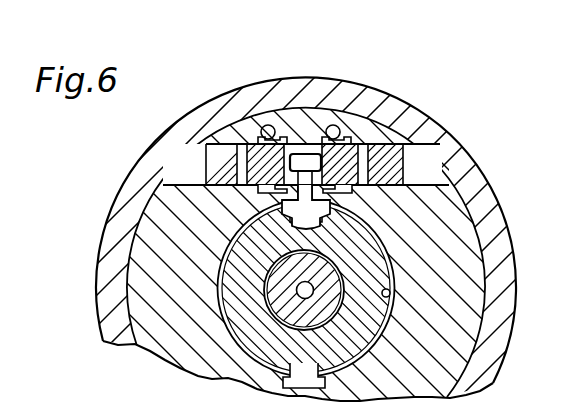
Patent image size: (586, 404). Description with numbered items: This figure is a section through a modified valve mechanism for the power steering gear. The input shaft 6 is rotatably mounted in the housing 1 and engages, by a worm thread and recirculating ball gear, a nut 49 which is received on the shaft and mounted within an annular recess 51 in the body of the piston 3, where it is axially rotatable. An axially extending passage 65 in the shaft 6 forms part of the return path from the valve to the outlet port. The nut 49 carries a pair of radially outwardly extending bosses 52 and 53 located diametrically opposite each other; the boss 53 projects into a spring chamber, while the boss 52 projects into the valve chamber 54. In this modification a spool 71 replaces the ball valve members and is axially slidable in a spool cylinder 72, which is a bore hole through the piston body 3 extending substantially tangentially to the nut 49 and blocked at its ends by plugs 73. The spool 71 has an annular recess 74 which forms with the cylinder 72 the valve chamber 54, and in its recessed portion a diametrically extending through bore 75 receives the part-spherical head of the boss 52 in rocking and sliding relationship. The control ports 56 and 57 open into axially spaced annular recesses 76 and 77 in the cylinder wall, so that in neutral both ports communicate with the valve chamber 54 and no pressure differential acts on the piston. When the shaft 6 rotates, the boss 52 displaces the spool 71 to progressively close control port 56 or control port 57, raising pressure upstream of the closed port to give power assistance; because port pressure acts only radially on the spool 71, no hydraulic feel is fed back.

The housing 1 is at (199, 118).
The piston 3 is at (158, 223).
The input shaft 6 is at (336, 306).
The nut 49 is at (236, 285).
The annular recess 51 is at (391, 295).
The boss 52 is at (330, 215).
The boss 53 is at (320, 380).
The valve chamber 54 is at (308, 153).
The control port 56 is at (264, 125).
The control port 57 is at (340, 128).
The axially extending passage 65 is at (312, 298).
The spool 71 is at (259, 128).
The spool cylinder 72 is at (258, 191).
The plugs 73 is at (405, 153).
The annular recess 74 is at (334, 125).
The through bore 75 is at (303, 153).
The annular recess 76 is at (270, 207).
The annular recess 77 is at (352, 190).